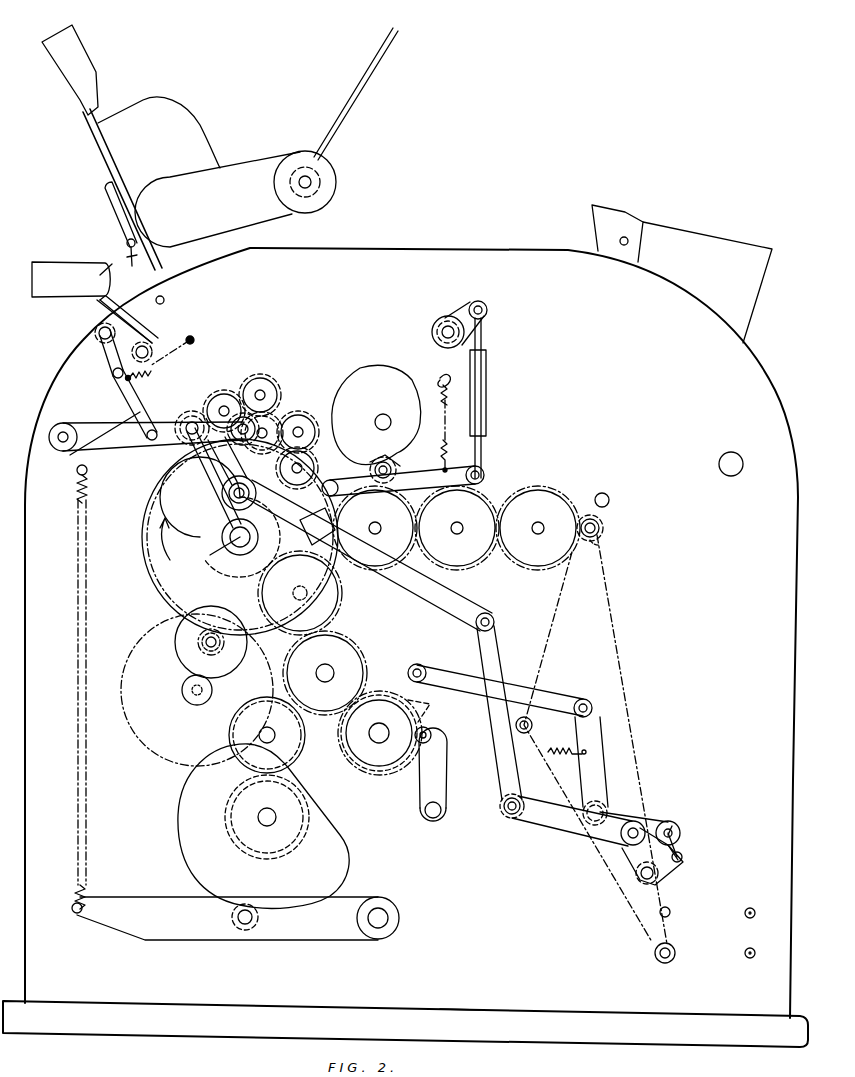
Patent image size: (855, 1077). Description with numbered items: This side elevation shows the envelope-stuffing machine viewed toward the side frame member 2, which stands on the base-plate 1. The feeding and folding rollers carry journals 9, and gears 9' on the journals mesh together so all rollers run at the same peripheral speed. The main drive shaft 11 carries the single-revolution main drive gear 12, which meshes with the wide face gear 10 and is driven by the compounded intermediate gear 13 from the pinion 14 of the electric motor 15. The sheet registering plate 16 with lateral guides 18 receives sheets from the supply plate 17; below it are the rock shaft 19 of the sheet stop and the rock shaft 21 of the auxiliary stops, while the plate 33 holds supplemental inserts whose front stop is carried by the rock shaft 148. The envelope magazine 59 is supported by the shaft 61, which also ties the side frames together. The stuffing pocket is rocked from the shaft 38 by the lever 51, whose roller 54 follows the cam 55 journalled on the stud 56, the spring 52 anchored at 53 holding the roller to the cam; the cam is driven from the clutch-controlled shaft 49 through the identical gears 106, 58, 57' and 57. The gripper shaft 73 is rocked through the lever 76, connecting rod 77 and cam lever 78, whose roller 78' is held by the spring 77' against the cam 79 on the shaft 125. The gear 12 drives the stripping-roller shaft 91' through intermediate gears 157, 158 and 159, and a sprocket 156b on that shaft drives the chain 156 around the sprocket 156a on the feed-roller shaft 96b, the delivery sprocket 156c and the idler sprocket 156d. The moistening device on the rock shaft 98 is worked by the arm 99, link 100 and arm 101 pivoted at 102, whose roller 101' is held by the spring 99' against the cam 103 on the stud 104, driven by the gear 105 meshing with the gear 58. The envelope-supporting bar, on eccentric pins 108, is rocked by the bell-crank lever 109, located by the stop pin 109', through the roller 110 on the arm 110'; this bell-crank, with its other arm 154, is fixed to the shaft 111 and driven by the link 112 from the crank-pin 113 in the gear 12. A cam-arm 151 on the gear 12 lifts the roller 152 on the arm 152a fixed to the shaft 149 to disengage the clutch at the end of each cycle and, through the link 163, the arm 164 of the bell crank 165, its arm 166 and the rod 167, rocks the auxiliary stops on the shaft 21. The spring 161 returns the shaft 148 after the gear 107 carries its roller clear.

The base-plate 1 is at (460, 1012).
The side frame member 2 is at (798, 566).
The journals 9 is at (279, 406).
The gears 9' is at (265, 426).
The wide face gear 10 is at (194, 412).
The main drive shaft 11 is at (238, 540).
The main drive gear 12 is at (143, 548).
The compounded intermediate gear 13 is at (190, 650).
The pinion 14 is at (182, 693).
The electric motor 15 is at (135, 740).
The sheet registering plate 16 is at (86, 122).
The plate 17 is at (350, 100).
The adjustable lateral guides 18 is at (82, 60).
The rock shaft 19 is at (165, 300).
The rock shaft 21 is at (126, 242).
The horizontal plate 33 is at (50, 270).
The rock shaft 38 is at (380, 915).
The transverse shaft 49 is at (301, 585).
The lever 51 is at (298, 936).
The extension coil spring 52 is at (78, 650).
The spring connection 53 is at (77, 468).
The roller 54 is at (240, 932).
The cam 55 is at (190, 850).
The stud 56 is at (267, 826).
The gear 57 is at (247, 817).
The gear 57' is at (247, 735).
The gear 58 is at (348, 645).
The magazine 59 is at (682, 240).
The transverse shaft 61 is at (731, 462).
The rock shaft 73 is at (440, 332).
The lever 76 is at (470, 304).
The connecting rod 77 is at (494, 401).
The extension coil spring 77' is at (433, 411).
The cam lever 78 is at (398, 474).
The roller 78' is at (381, 462).
The cam 79 is at (370, 372).
The stripping-roller shaft 91' is at (607, 517).
The feed-roller shaft 96b is at (672, 828).
The rock shaft 98 is at (603, 805).
The arm 99 is at (586, 762).
The extension coil spring 99' is at (567, 762).
The adjustable link 100 is at (448, 677).
The arm 101 is at (449, 768).
The roller 101' is at (449, 736).
The pivot 102 is at (430, 818).
The cam 103 is at (390, 762).
The stud 104 is at (372, 740).
The gear 105 is at (370, 690).
The gear 106 is at (262, 597).
The gear 107 is at (200, 530).
The pins 108 is at (655, 874).
The bell-crank lever 109 is at (698, 841).
The stop pin 109' is at (699, 853).
The roller 110 is at (639, 825).
The bell-crank arm 110' is at (578, 821).
The transverse shaft 111 is at (508, 816).
The adjustable link 112 is at (420, 598).
The crank-pin 113 is at (242, 478).
The transverse shaft 125 is at (383, 414).
The rock shaft 148 is at (100, 332).
The transverse shaft 149 is at (63, 432).
The arm 151 is at (168, 490).
The roller 152 is at (240, 434).
The arm 152a is at (100, 430).
The bell-crank arm 154 is at (495, 642).
The chain 156 is at (622, 606).
The sprocket 156a is at (668, 822).
The sprocket 156b is at (605, 548).
The sprocket 156c is at (672, 945).
The idler sprocket 156d is at (532, 726).
The intermediate gear 157 is at (375, 528).
The intermediate gear 158 is at (457, 528).
The intermediate gear 159 is at (538, 528).
The extension coil spring 161 is at (190, 336).
The link 163 is at (125, 440).
The bell-crank arm 164 is at (150, 366).
The bell crank 165 is at (150, 345).
The bell-crank arm 166 is at (118, 325).
The rod 167 is at (100, 282).